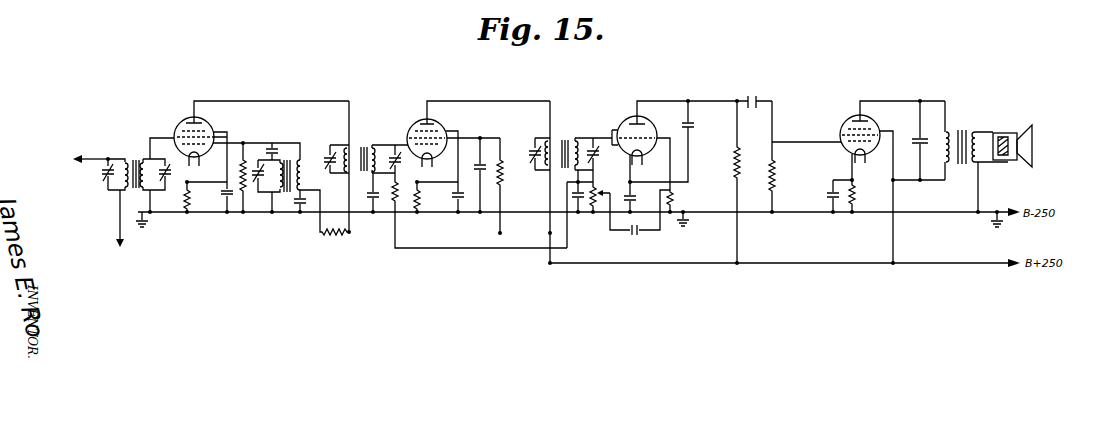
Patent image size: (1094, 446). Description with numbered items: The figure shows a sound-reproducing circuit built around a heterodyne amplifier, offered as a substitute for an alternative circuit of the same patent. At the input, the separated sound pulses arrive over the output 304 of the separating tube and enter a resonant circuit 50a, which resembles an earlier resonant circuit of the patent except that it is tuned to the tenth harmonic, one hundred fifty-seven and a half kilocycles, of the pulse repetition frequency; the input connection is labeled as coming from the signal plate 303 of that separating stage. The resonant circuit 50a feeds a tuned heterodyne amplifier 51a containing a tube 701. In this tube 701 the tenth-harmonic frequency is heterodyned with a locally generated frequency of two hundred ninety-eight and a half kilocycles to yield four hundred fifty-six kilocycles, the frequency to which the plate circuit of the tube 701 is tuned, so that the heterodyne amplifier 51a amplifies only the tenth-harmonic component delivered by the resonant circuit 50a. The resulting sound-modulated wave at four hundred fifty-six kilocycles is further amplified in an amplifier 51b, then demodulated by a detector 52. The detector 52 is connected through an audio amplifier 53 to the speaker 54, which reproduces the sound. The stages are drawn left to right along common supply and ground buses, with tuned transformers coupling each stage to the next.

The tube 701 is at (185, 113).
The resonant circuit 50a is at (131, 191).
The tuned heterodyne amplifier 51a is at (282, 158).
The amplifier 51b is at (445, 164).
The detector 52 is at (631, 116).
The audio amplifier 53 is at (848, 117).
The speaker 54 is at (1018, 131).
The signal plate 303 is at (45, 167).
The output of the separating tube 304 is at (93, 166).